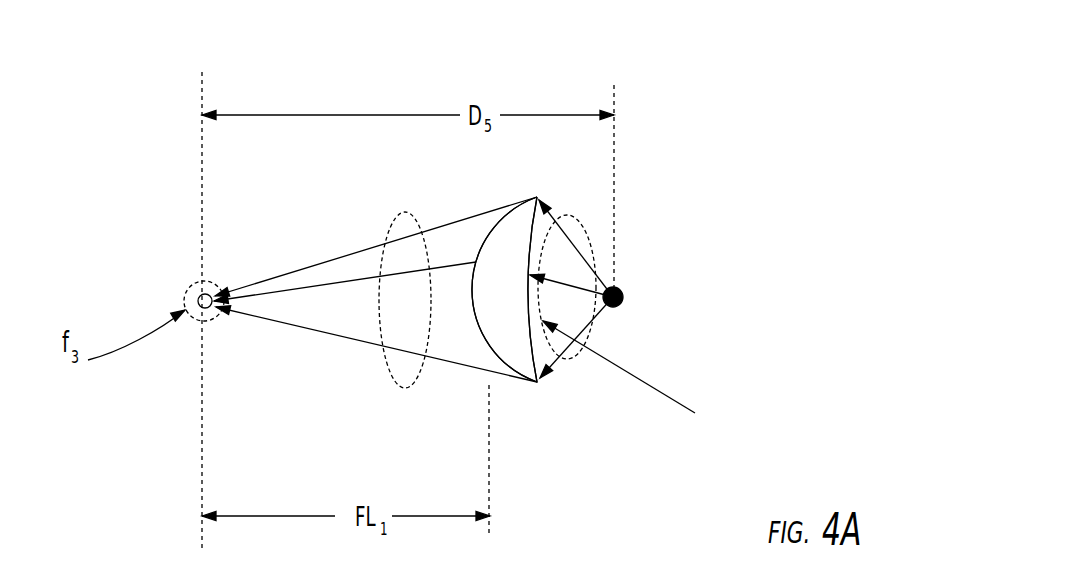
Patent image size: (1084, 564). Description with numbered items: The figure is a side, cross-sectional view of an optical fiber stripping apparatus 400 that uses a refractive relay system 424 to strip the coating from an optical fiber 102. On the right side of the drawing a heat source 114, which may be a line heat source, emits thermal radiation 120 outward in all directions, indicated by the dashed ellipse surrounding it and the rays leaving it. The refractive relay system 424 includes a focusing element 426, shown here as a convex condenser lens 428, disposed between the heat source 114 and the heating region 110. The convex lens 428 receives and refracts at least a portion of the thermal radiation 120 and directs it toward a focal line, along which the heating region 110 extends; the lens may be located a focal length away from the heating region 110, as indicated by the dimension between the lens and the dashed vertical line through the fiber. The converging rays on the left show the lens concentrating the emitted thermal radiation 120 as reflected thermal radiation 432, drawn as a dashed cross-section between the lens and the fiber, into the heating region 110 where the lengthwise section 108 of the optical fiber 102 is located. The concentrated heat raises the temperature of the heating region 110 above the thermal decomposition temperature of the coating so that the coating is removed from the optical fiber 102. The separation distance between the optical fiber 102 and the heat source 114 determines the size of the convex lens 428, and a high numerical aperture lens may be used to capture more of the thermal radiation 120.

The optical fiber 102 is at (177, 295).
The lengthwise section 108 is at (203, 312).
The heating region 110 is at (215, 278).
The heat source 114 is at (643, 293).
The thermal radiation 120 is at (587, 232).
The optical fiber stripping apparatus 400 is at (692, 120).
The refractive relay system 424 is at (515, 395).
The focusing element 426 is at (505, 350).
The convex lens 428 is at (503, 237).
The reflected thermal radiation 432 is at (405, 388).